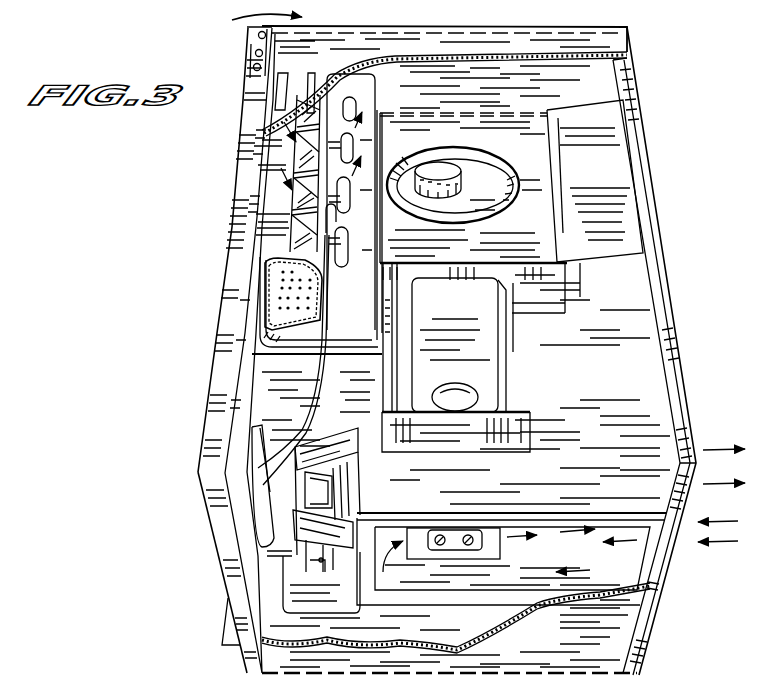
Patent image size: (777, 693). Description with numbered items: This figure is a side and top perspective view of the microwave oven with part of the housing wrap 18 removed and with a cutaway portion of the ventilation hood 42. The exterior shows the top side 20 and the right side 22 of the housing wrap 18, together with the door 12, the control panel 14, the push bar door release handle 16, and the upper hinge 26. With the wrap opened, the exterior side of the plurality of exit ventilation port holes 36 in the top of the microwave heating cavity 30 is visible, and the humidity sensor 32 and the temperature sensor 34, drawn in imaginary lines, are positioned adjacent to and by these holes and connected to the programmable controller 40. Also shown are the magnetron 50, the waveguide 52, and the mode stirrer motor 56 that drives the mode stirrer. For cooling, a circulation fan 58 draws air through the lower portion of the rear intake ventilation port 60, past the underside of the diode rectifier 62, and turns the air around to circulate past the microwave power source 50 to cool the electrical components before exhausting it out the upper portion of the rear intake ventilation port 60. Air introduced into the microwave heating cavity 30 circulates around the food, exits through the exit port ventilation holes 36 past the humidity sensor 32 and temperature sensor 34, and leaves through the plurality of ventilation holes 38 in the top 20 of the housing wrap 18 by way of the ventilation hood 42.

The door 12 is at (235, 268).
The control panel 14 is at (216, 396).
The push bar door release handle 16 is at (222, 628).
The housing wrap 18 is at (253, 20).
The top side 20 is at (625, 36).
The right side 22 is at (610, 648).
The upper hinge 26 is at (250, 42).
The microwave heating cavity 30 is at (292, 382).
The humidity sensor 32 is at (262, 233).
The temperature sensor 34 is at (326, 213).
The exit ventilation port holes 36 is at (282, 290).
The ventilation holes 38 is at (278, 95).
The programmable controller 40 is at (270, 494).
The ventilation hood 42 is at (352, 312).
The magnetron 50 is at (462, 402).
The waveguide 52 is at (481, 337).
The mode stirrer motor 56 is at (447, 167).
The circulation fan 58 is at (321, 562).
The rear intake ventilation port 60 is at (673, 565).
The diode rectifier 62 is at (483, 537).